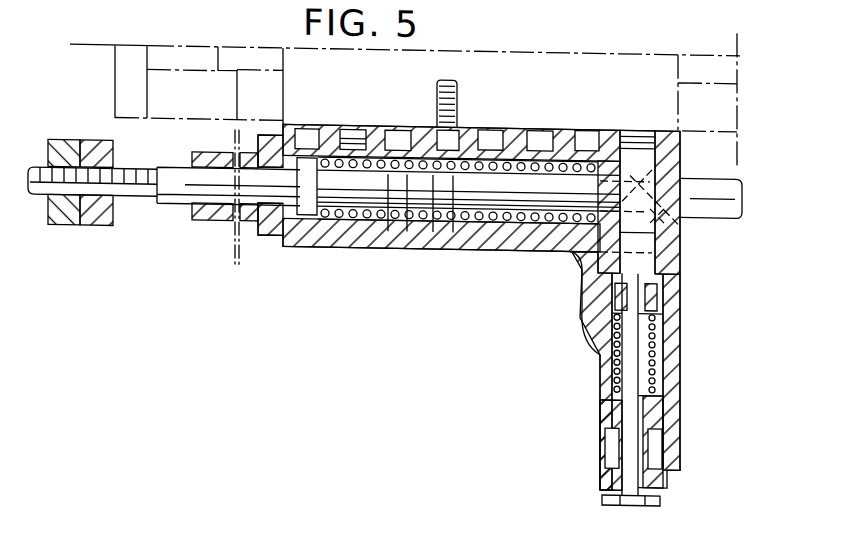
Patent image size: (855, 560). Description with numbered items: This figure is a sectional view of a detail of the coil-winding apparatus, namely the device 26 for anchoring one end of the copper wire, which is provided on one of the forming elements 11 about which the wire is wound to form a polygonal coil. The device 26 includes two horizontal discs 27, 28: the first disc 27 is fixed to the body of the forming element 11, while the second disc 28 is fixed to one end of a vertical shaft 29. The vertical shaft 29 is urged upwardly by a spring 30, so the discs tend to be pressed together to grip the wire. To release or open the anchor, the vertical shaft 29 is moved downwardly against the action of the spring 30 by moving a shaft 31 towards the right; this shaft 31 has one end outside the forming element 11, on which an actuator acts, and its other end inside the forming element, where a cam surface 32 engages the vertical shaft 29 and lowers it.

The forming element 11 is at (597, 272).
The device for anchoring one end of the copper wire 26 is at (672, 499).
The horizontal disc 27 is at (602, 477).
The horizontal disc 28 is at (615, 502).
The vertical shaft 29 is at (630, 434).
The spring 30 is at (677, 355).
The shaft 31 is at (180, 206).
The cam surface 32 is at (667, 214).